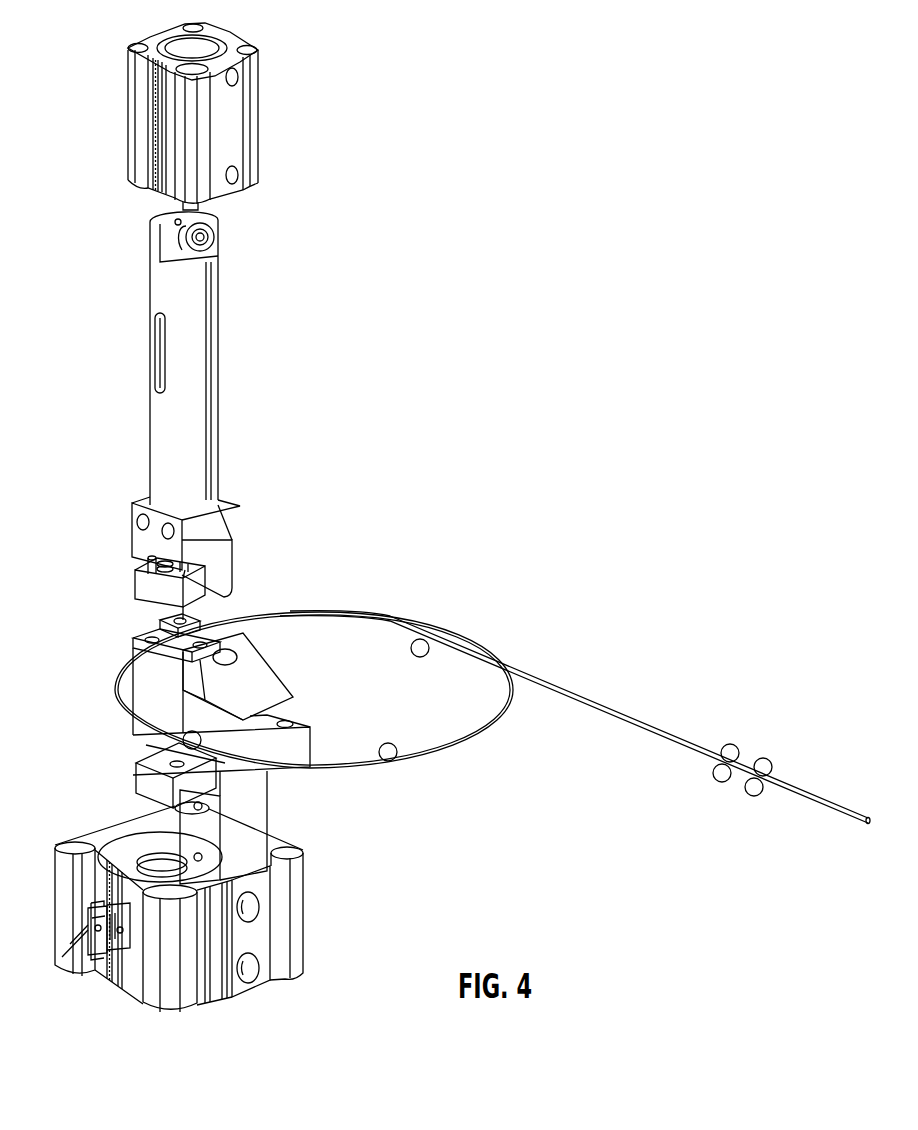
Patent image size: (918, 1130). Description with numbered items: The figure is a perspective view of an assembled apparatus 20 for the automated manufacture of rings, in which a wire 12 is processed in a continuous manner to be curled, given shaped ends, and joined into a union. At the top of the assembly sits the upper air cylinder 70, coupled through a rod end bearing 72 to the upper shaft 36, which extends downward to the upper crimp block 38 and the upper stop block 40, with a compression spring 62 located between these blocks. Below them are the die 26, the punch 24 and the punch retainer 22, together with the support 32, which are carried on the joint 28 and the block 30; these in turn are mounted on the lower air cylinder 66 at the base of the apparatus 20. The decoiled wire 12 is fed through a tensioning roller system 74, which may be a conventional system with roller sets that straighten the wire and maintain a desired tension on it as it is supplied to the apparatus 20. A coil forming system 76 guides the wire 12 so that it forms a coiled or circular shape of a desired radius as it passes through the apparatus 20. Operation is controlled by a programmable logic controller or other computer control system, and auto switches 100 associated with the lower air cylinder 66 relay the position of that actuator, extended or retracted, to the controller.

The wire 12 is at (830, 805).
The apparatus 20 is at (448, 517).
The punch retainer 22 is at (152, 694).
The punch 24 is at (140, 641).
The die 26 is at (165, 620).
The joint 28 is at (132, 787).
The block 30 is at (260, 816).
The support 32 is at (258, 666).
The upper shaft 36 is at (218, 317).
The upper crimp block 38 is at (218, 554).
The upper stop block 40 is at (133, 590).
The compression spring 62 is at (142, 568).
The lower air cylinder 66 is at (306, 918).
The upper air cylinder 70 is at (260, 133).
The rod end bearing 72 is at (165, 210).
The tensioning roller system 74 is at (754, 728).
The coil forming system 76 is at (430, 640).
The auto switches 100 is at (93, 930).